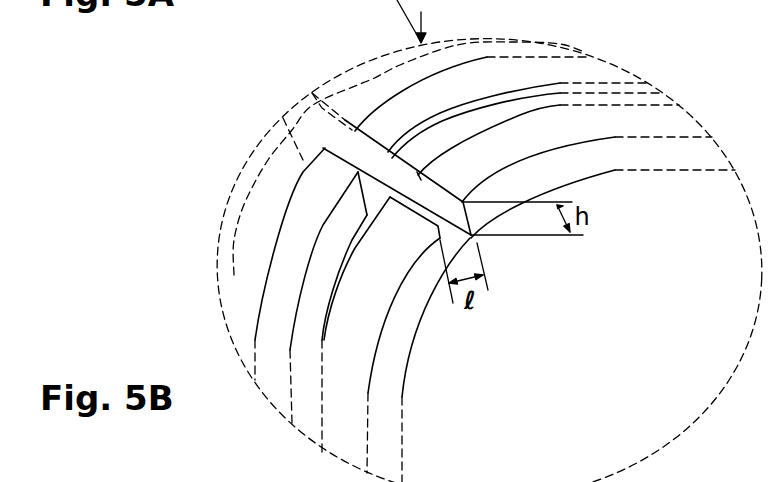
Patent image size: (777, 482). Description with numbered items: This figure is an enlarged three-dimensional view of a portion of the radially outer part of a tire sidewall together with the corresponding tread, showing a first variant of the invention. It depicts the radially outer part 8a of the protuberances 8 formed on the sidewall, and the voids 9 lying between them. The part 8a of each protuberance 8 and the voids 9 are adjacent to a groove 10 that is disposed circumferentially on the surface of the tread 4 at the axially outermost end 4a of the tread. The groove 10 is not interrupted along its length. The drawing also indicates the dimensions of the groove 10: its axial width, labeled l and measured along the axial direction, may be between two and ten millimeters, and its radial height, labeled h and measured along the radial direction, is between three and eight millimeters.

The tread 4 is at (537, 142).
The axially outermost end of the tread 4a is at (452, 130).
The protuberance 8 is at (299, 198).
The radially outer part of the protuberance 8a is at (290, 237).
The void 9 is at (347, 268).
The groove 10 is at (373, 182).